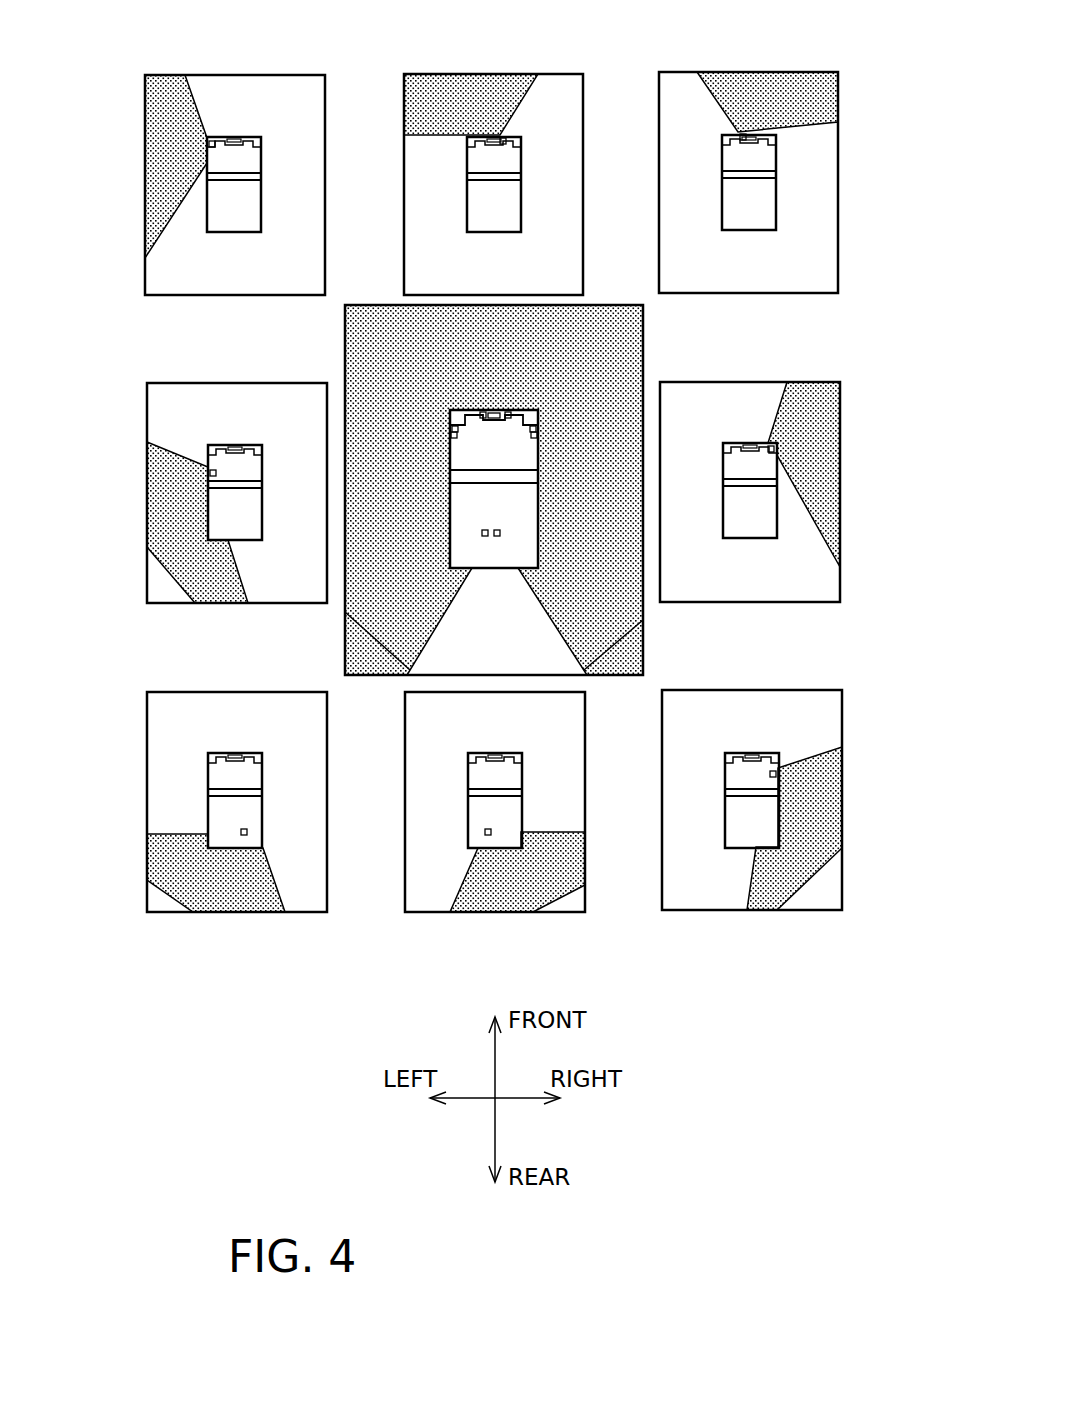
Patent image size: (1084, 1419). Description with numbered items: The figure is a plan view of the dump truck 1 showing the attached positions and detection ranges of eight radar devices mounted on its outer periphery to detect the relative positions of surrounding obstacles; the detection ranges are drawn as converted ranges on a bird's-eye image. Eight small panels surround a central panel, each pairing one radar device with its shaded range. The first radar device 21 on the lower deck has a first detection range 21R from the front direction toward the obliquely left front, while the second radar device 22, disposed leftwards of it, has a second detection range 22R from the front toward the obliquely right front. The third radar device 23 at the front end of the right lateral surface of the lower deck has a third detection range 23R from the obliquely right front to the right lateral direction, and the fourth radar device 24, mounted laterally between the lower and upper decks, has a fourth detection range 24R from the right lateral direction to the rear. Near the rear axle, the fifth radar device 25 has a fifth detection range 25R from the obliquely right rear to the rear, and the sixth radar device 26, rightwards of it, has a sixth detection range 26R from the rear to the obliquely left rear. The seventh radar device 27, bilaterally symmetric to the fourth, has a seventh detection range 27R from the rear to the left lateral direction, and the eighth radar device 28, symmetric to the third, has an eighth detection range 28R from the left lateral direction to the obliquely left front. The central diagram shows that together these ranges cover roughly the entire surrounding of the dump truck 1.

The dump truck 1 is at (504, 461).
The first radar device 21 is at (508, 409).
The second radar device 22 is at (483, 409).
The third radar device 23 is at (538, 430).
The fourth radar device 24 is at (538, 437).
The fifth radar device 25 is at (485, 537).
The sixth radar device 26 is at (497, 537).
The seventh radar device 27 is at (450, 435).
The eighth radar device 28 is at (450, 427).
The first detection range 21R is at (488, 75).
The second detection range 22R is at (748, 72).
The third detection range 23R is at (815, 398).
The fourth detection range 24R is at (760, 900).
The fifth detection range 25R is at (495, 905).
The sixth detection range 26R is at (238, 900).
The seventh detection range 27R is at (222, 603).
The eighth detection range 28R is at (162, 75).